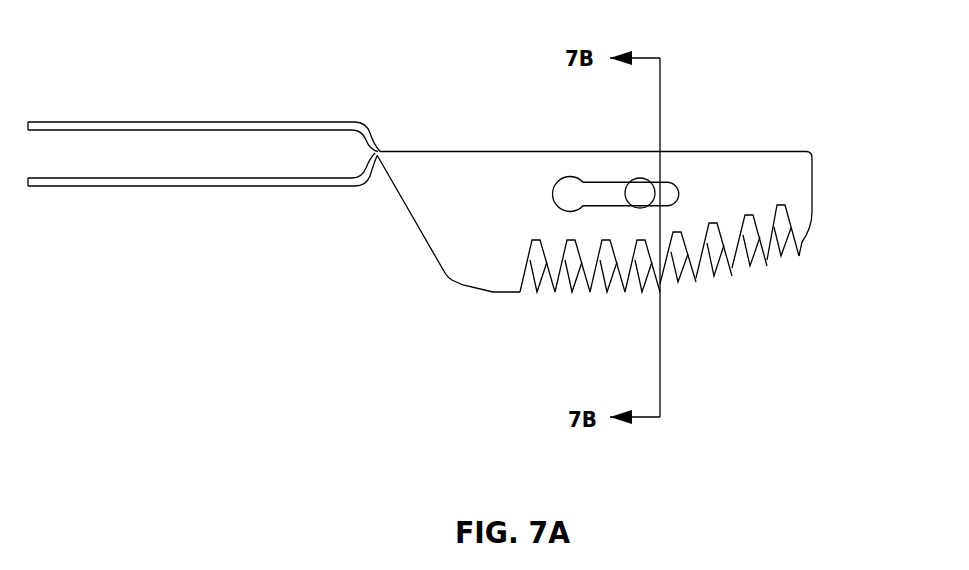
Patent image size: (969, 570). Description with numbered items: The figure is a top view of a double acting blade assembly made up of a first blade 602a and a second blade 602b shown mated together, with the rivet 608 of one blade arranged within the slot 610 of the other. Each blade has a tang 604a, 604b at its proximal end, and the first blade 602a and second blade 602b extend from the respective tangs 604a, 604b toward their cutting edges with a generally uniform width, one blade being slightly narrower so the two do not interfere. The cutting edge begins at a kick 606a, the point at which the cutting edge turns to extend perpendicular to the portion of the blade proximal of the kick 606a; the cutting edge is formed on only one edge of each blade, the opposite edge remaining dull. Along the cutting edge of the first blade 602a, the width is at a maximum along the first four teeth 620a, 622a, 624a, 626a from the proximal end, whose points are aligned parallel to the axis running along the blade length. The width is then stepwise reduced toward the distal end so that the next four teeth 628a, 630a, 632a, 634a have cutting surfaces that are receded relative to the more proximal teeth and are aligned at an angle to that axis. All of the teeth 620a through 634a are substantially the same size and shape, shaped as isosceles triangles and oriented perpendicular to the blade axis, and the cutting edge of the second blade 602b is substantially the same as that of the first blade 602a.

The first blade 602a is at (287, 107).
The second blade 602b is at (293, 205).
The tang 604a is at (107, 127).
The tang 604b is at (115, 180).
The kick 606a is at (472, 272).
The rivet 608 is at (638, 185).
The slot 610 is at (552, 176).
The tooth 620a is at (554, 268).
The tooth 622a is at (588, 268).
The tooth 624a is at (625, 268).
The tooth 626a is at (650, 268).
The tooth 628a is at (683, 255).
The tooth 630a is at (727, 260).
The tooth 632a is at (760, 242).
The tooth 634a is at (801, 238).